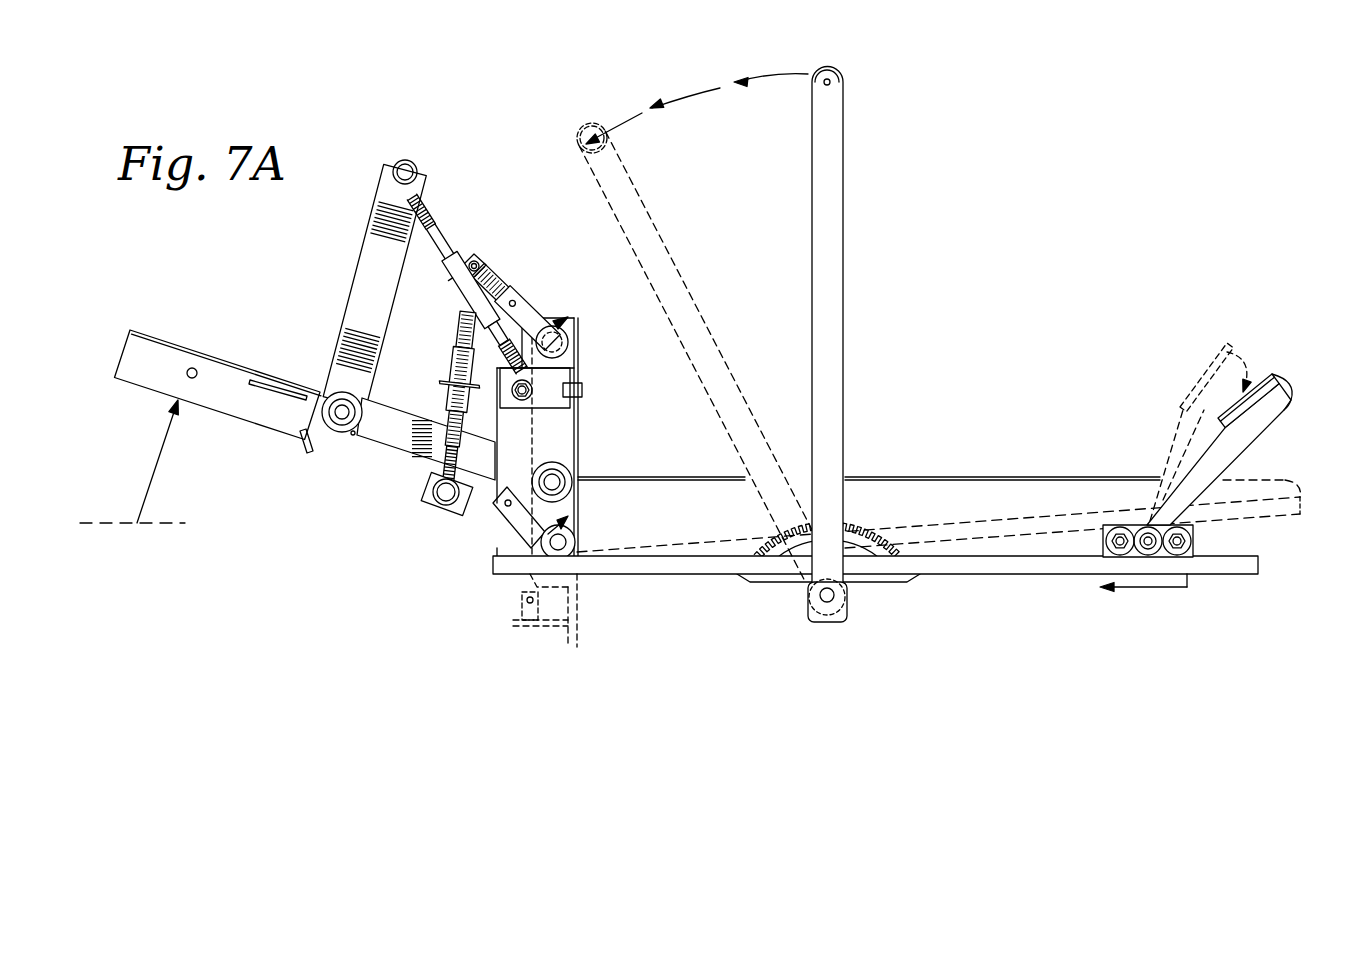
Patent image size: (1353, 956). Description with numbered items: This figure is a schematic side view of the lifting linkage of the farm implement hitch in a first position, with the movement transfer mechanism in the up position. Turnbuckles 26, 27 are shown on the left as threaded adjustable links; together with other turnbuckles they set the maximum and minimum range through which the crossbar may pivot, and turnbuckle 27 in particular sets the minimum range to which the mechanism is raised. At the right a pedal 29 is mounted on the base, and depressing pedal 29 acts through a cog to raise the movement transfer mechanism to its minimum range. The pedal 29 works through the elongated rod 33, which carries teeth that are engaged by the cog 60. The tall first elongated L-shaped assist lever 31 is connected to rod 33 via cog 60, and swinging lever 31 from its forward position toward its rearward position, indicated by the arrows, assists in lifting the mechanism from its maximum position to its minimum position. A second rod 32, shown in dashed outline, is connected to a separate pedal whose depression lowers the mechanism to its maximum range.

The turnbuckle 26 is at (448, 362).
The turnbuckle 27 is at (452, 258).
The pedal 29 is at (1272, 372).
The first elongated L-shaped assist lever 31 is at (843, 145).
The rod 32 is at (1302, 496).
The rod 33 is at (1250, 568).
The cog 60 is at (848, 596).